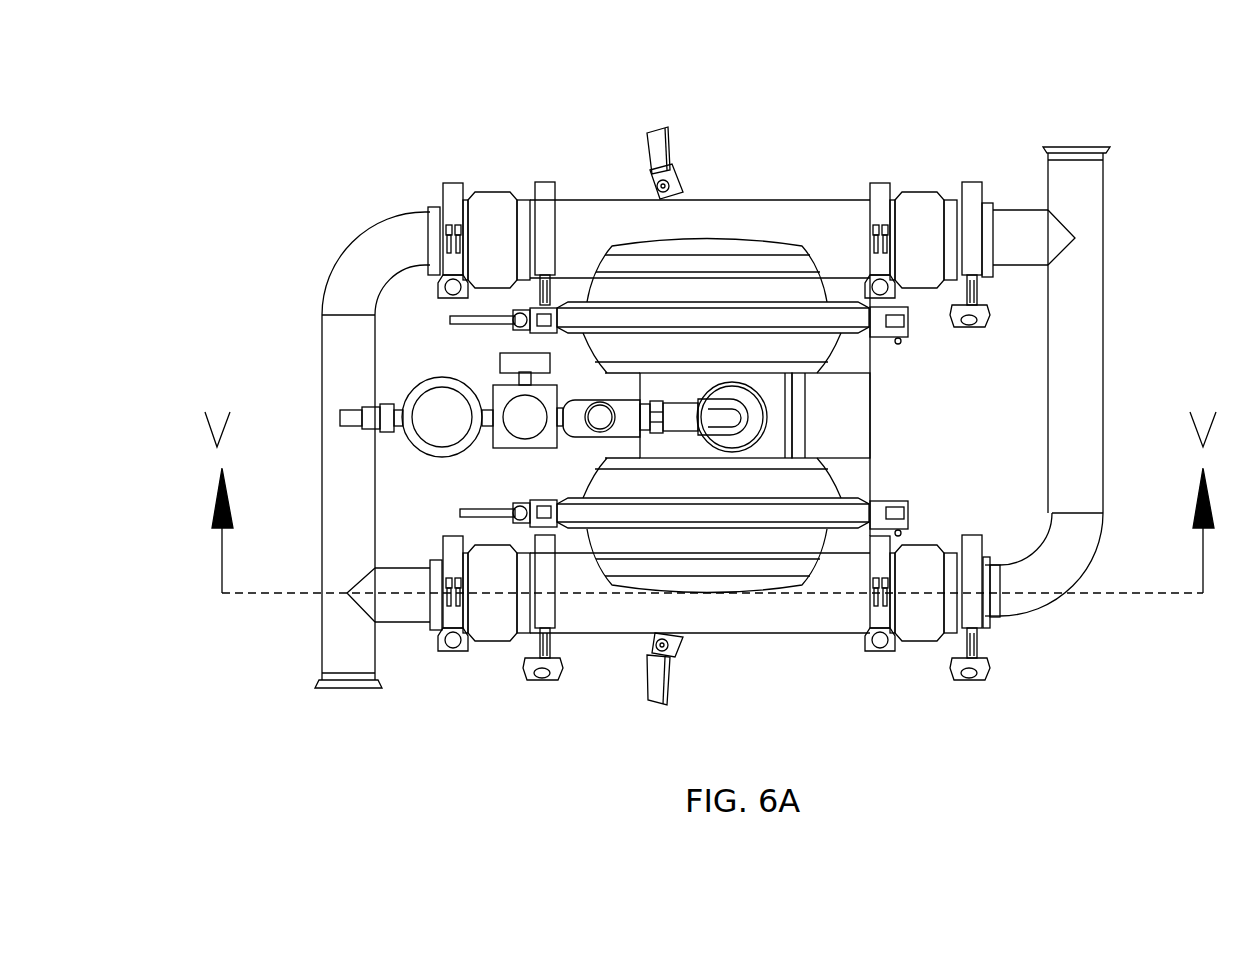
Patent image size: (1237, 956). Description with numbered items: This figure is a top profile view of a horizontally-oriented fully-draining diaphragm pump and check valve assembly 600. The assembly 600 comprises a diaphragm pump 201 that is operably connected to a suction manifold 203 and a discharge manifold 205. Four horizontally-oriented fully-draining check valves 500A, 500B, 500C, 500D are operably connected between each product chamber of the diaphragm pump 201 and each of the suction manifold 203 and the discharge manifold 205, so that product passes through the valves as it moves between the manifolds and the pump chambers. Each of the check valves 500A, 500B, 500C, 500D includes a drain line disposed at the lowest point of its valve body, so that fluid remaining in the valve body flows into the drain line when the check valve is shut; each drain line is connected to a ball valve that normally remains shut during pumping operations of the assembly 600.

The horizontally-oriented fully-draining diaphragm pump and check valve assembly 600 is at (345, 125).
The diaphragm pump 201 is at (918, 408).
The suction manifold 203 is at (1104, 196).
The discharge manifold 205 is at (322, 360).
The horizontally-oriented fully-draining check valve 500A is at (918, 190).
The horizontally-oriented fully-draining check valve 500B is at (922, 640).
The horizontally-oriented fully-draining check valve 500C is at (487, 640).
The horizontally-oriented fully-draining check valve 500D is at (493, 192).